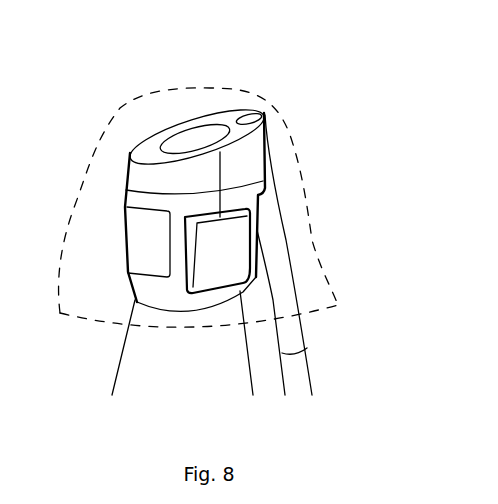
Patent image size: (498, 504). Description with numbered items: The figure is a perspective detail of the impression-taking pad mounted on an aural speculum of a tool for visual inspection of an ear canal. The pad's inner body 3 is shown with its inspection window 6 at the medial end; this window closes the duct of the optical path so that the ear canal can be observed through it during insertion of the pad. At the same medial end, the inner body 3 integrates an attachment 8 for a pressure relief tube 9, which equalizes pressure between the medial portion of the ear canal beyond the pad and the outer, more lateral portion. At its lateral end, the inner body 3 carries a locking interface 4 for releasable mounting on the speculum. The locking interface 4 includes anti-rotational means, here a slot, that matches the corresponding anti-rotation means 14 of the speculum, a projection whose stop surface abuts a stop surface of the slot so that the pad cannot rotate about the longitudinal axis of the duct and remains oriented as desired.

The inner body 3 is at (294, 80).
The locking interface 4 is at (140, 240).
The inspection window 6 is at (196, 139).
The attachment 8 is at (255, 119).
The pressure relief tube 9 is at (282, 267).
The anti-rotation means 14 is at (217, 247).